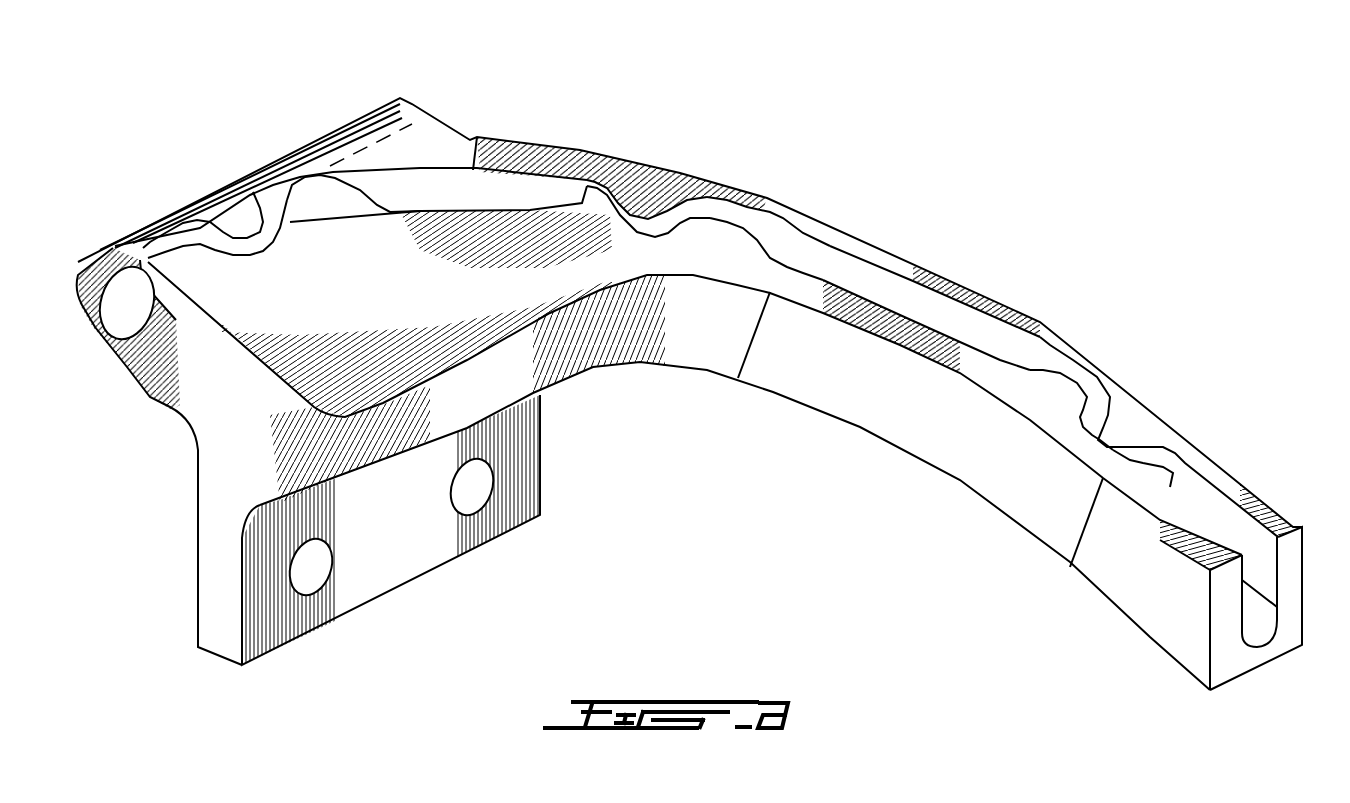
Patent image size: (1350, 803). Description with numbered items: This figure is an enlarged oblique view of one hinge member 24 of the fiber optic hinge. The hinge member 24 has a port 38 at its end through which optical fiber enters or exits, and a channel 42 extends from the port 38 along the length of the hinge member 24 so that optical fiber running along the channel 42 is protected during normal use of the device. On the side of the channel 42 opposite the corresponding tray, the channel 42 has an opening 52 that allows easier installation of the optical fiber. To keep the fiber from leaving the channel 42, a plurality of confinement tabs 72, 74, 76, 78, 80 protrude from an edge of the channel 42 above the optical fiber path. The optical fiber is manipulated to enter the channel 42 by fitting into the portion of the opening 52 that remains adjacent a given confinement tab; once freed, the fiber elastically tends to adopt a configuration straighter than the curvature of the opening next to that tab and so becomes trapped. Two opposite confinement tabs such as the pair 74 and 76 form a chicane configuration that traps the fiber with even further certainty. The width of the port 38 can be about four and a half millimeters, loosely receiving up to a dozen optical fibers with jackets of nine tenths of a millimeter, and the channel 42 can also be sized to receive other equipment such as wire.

The hinge member 24 is at (1010, 243).
The port 38 is at (1257, 550).
The channel 42 is at (493, 157).
The opening 52 is at (887, 283).
The confinement tab 72 is at (245, 222).
The confinement tab 74 is at (647, 197).
The confinement tab 76 is at (720, 237).
The confinement tab 78 is at (1060, 390).
The confinement tab 80 is at (1130, 423).